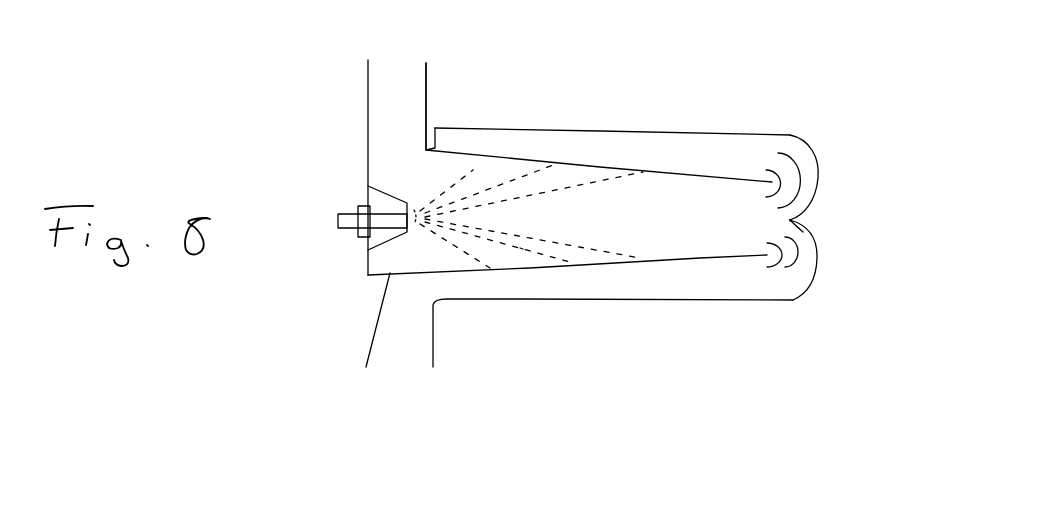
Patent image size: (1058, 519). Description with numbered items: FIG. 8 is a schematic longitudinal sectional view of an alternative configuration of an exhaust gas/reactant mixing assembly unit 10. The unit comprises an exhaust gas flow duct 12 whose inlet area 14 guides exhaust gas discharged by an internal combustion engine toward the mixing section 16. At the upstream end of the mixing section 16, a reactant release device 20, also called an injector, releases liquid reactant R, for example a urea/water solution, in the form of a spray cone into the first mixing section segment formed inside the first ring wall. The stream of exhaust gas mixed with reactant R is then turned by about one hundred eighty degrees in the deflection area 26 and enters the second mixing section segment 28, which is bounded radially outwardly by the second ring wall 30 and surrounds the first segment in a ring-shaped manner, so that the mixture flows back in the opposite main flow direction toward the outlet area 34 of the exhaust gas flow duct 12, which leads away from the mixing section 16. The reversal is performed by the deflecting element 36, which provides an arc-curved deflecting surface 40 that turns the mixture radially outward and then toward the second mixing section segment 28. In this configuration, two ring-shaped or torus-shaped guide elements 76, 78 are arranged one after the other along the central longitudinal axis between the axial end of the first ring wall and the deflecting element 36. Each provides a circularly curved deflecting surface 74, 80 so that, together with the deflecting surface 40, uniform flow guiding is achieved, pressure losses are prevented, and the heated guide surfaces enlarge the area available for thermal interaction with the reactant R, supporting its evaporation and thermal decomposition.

The exhaust gas/reactant mixing assembly unit 10 is at (705, 103).
The exhaust gas flow duct 12 is at (412, 78).
The inlet area 14 is at (367, 78).
The mixing section 16 is at (611, 348).
The reactant release device 20 is at (348, 232).
The deflection area 26 is at (782, 344).
The second mixing section segment 28 is at (522, 143).
The second ring wall 30 is at (597, 132).
The outlet area 34 is at (366, 347).
The deflecting element 36 is at (813, 237).
The deflecting surface 40 is at (812, 272).
The deflecting surface 74 is at (767, 262).
The guide element 76 is at (790, 153).
The guide element 78 is at (800, 180).
The deflecting surface 80 is at (767, 270).
The reactant R is at (522, 248).